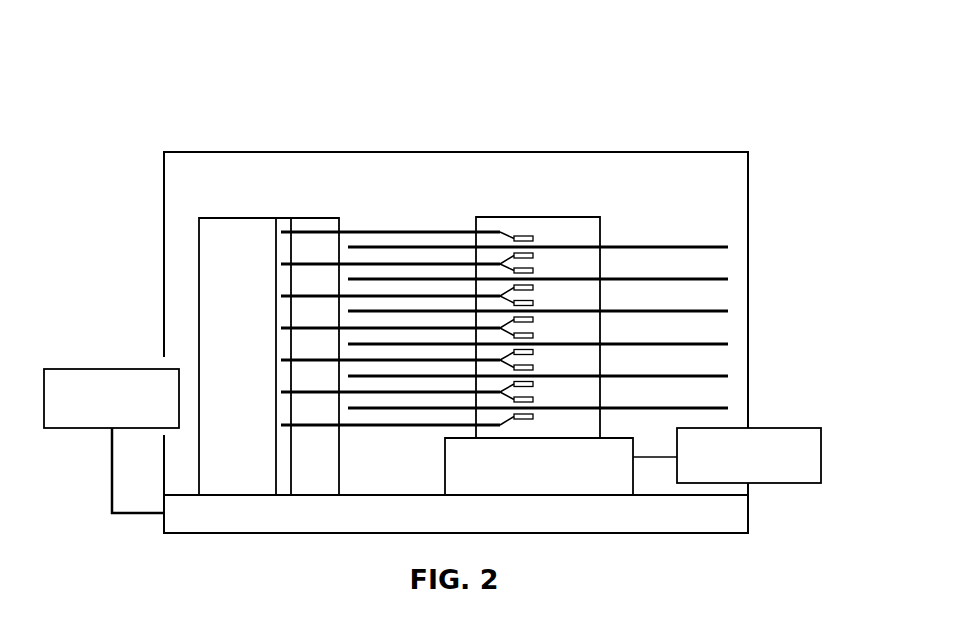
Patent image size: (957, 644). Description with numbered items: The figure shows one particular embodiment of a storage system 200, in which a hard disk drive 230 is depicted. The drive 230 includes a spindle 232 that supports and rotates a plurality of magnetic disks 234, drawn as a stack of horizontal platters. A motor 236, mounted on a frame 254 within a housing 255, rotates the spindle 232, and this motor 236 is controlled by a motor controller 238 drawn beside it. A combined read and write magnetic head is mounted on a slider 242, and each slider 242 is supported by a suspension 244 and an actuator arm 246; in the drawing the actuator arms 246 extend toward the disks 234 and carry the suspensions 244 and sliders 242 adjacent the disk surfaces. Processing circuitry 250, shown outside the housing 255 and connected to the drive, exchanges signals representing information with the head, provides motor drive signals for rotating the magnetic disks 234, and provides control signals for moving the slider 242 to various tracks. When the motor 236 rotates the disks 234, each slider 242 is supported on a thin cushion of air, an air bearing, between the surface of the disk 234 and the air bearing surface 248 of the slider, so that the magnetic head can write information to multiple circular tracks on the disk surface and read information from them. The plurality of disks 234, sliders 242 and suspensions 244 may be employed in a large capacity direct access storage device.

The storage system 200 is at (136, 104).
The hard disk drive 230 is at (656, 210).
The spindle 232 is at (588, 217).
The magnetic disks 234 is at (728, 247).
The motor 236 is at (553, 478).
The motor controller 238 is at (782, 483).
The slider 242 is at (536, 256).
The suspension 244 is at (505, 240).
The actuator arm 246 is at (447, 264).
The air bearing surface 248 is at (534, 369).
The processing circuitry 250 is at (83, 369).
The frame 254 is at (215, 533).
The housing 255 is at (690, 152).